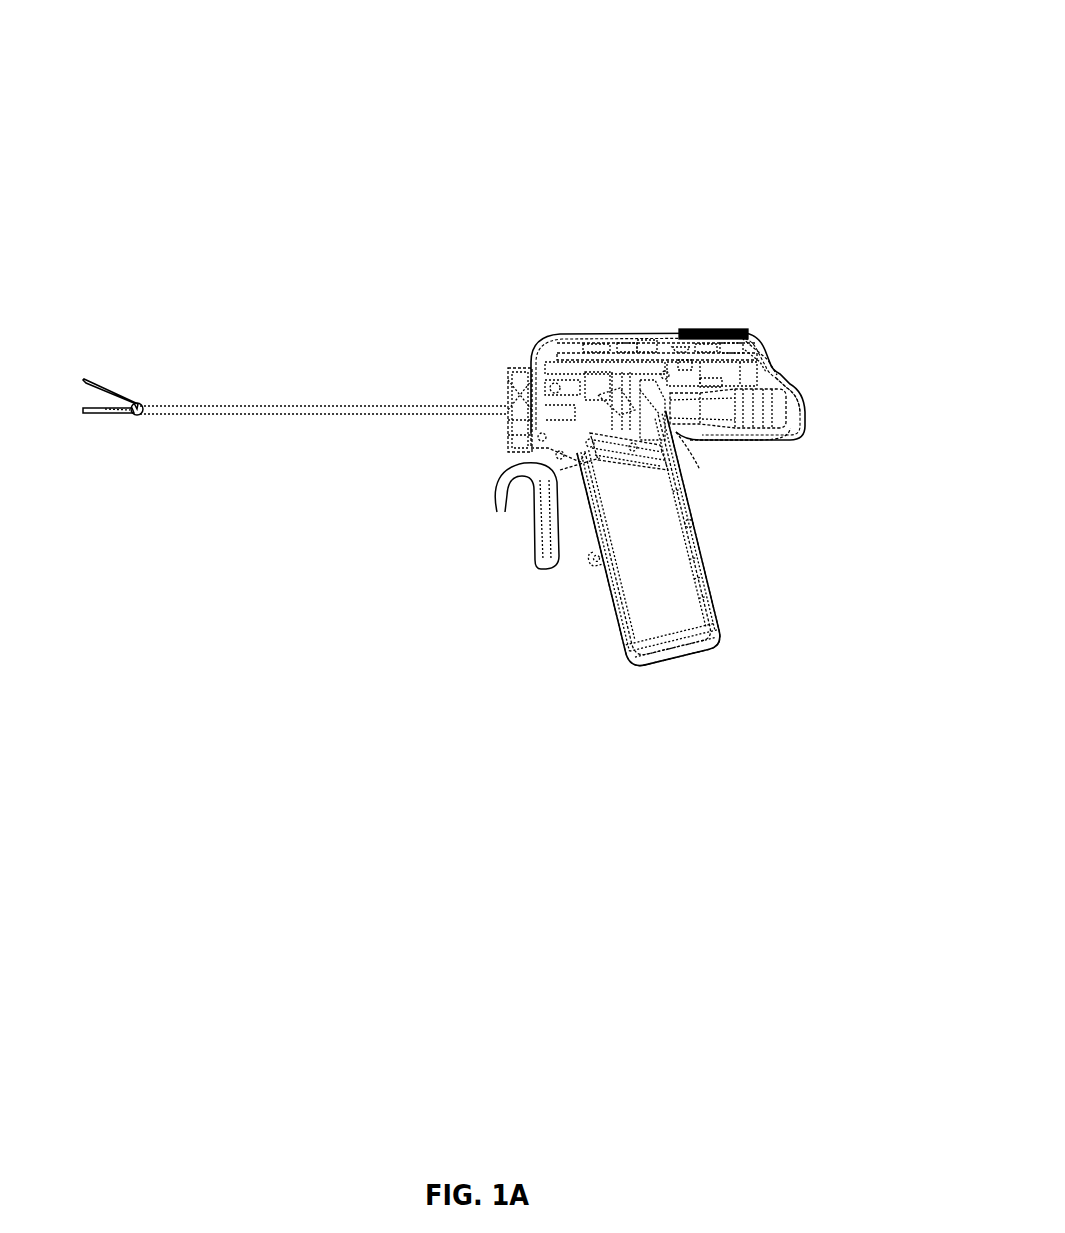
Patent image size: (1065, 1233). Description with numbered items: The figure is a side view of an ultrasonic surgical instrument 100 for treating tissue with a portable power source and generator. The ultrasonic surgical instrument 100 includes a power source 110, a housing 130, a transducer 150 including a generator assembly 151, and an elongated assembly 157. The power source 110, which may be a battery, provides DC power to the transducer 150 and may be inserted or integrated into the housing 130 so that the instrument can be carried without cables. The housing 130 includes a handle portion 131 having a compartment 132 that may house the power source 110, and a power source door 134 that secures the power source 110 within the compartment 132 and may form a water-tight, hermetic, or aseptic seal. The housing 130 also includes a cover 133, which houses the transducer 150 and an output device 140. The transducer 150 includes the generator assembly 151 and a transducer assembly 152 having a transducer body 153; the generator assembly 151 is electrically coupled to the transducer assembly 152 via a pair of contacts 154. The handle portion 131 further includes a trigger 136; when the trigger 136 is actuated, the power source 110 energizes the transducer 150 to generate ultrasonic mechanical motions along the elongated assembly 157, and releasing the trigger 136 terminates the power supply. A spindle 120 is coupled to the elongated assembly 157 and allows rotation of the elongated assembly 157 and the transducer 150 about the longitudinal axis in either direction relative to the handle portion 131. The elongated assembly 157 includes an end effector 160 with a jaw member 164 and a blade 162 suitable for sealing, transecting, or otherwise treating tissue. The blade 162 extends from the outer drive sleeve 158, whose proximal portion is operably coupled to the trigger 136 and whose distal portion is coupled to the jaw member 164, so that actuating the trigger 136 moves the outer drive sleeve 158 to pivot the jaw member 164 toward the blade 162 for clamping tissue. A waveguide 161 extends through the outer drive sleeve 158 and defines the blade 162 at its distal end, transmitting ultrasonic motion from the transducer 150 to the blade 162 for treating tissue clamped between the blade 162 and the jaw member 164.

The ultrasonic surgical instrument 100 is at (530, 185).
The power source 110 is at (663, 600).
The spindle 120 is at (506, 428).
The housing 130 is at (689, 454).
The handle portion 131 is at (606, 599).
The compartment 132 is at (727, 621).
The cover 133 is at (784, 366).
The power source door 134 is at (672, 672).
The trigger 136 is at (539, 514).
The output device 140 is at (704, 320).
The transducer 150 is at (746, 346).
The generator assembly 151 is at (651, 333).
The transducer assembly 152 is at (754, 447).
The transducer body 153 is at (770, 411).
The pair of contacts 154 is at (598, 392).
The elongated assembly 157 is at (301, 386).
The outer drive sleeve 158 is at (344, 415).
The end effector 160 is at (82, 370).
The waveguide 161 is at (93, 423).
The blade 162 is at (107, 414).
The jaw member 164 is at (107, 390).